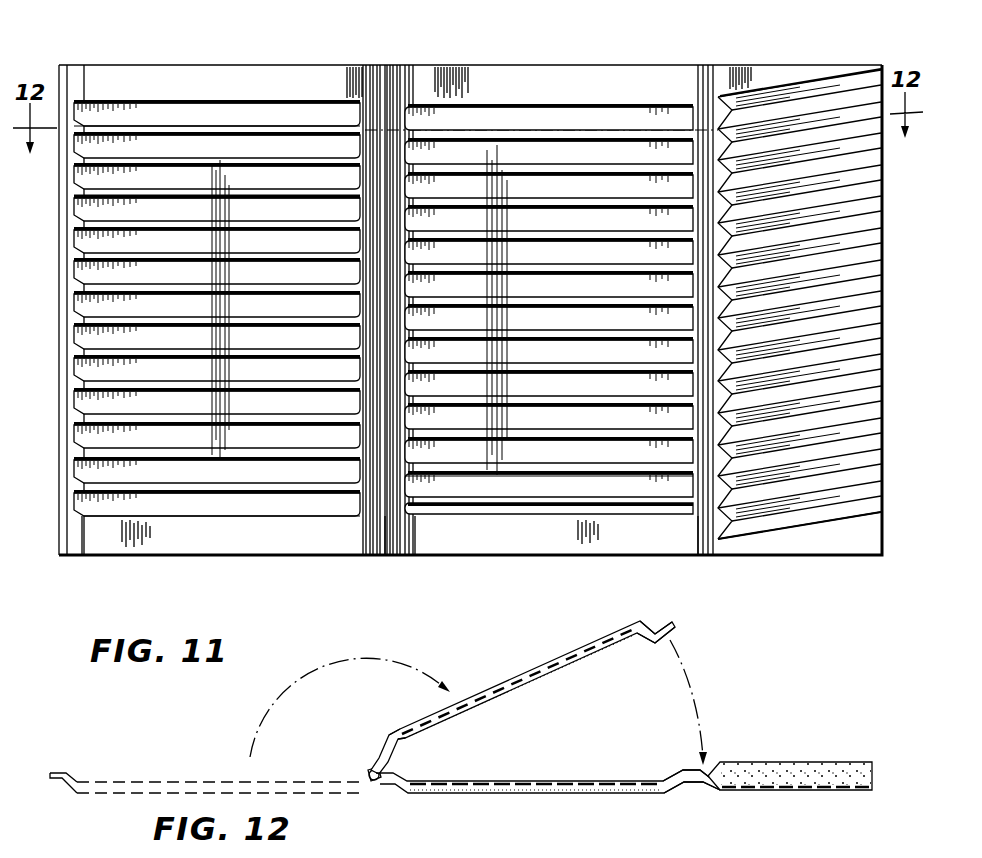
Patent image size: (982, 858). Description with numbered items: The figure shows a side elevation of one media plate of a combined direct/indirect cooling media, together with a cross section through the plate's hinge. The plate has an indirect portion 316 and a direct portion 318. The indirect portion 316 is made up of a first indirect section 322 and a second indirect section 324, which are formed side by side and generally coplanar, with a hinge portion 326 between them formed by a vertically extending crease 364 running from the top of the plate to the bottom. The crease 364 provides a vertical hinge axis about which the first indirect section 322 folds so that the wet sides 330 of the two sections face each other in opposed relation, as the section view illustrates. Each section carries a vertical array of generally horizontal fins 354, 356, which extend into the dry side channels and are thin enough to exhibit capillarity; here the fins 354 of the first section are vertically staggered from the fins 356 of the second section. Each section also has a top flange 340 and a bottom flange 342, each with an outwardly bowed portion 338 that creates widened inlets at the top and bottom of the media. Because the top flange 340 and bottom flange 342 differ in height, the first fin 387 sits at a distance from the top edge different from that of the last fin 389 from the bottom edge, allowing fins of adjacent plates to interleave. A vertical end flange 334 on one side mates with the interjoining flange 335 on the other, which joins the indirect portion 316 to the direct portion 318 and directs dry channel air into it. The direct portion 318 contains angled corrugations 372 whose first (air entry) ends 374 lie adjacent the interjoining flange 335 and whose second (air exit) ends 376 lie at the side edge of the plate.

In FIG. 11, the indirect portion 316 is at (340, 30).
In FIG. 11, the direct portion 318 is at (802, 75).
In FIG. 11, the first indirect section 322 is at (231, 60).
In FIG. 12, the first indirect section 322 is at (554, 663).
In FIG. 11, the second indirect section 324 is at (614, 60).
In FIG. 12, the second indirect section 324 is at (659, 626).
In FIG. 11, the hinge portion 326 is at (383, 75).
In FIG. 12, the hinge portion 326 is at (377, 783).
In FIG. 12, the wet side 330 is at (536, 689).
In FIG. 11, the end flange 334 is at (67, 65).
In FIG. 11, the interjoining flange 335 is at (713, 88).
In FIG. 12, the interjoining flange 335 is at (701, 776).
In FIG. 11, the outwardly bowed portion 338 is at (270, 85).
In FIG. 11, the top flange 340 is at (327, 68).
In FIG. 11, the bottom flange 342 is at (165, 543).
In FIG. 11, the fins 354 is at (97, 198).
In FIG. 12, the fins 354 is at (502, 683).
In FIG. 11, the fins 356 is at (493, 475).
In FIG. 12, the fins 356 is at (527, 793).
In FIG. 11, the crease 364 is at (380, 545).
In FIG. 12, the crease 364 is at (365, 785).
In FIG. 11, the corrugations 372 is at (847, 105).
In FIG. 11, the first (air entry) end 374 is at (712, 515).
In FIG. 11, the second (air exit) end 376 is at (880, 470).
In FIG. 11, the first fin 387 is at (153, 128).
In FIG. 11, the last fin 389 is at (185, 493).